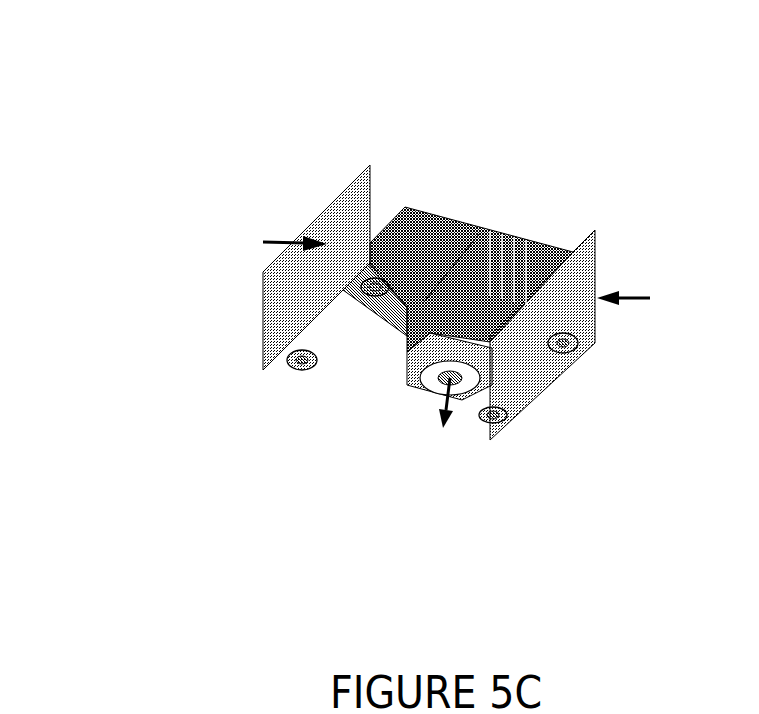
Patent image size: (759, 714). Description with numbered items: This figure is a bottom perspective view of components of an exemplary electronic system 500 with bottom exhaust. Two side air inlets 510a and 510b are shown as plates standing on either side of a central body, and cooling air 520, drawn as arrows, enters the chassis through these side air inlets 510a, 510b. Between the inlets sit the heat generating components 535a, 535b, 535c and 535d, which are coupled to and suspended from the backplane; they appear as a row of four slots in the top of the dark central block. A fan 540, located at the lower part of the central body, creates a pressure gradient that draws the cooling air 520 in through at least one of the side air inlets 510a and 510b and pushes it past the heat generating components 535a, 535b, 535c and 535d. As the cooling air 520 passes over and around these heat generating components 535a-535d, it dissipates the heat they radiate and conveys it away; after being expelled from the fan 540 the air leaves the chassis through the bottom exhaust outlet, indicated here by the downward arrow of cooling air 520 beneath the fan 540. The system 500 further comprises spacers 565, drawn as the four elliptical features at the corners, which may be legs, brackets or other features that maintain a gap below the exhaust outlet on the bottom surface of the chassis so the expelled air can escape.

The electronic system 500 is at (60, 47).
The side air inlet 510a is at (345, 212).
The side air inlet 510b is at (582, 280).
The cooling air 520 is at (264, 238).
The heat generating component 535a is at (489, 228).
The heat generating component 535b is at (497, 230).
The heat generating component 535c is at (522, 238).
The heat generating component 535d is at (533, 240).
The fan 540 is at (428, 388).
The spacer 565 is at (365, 295).